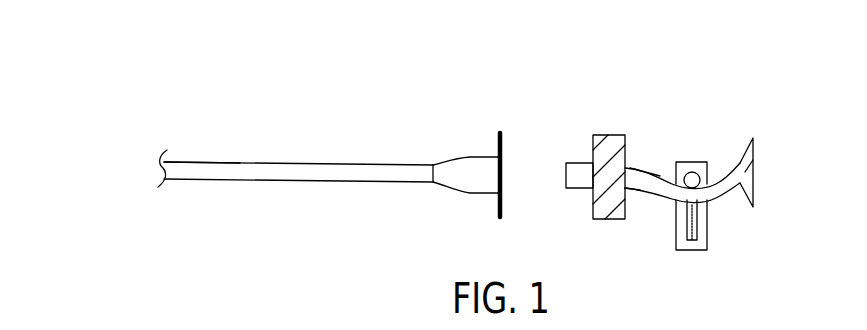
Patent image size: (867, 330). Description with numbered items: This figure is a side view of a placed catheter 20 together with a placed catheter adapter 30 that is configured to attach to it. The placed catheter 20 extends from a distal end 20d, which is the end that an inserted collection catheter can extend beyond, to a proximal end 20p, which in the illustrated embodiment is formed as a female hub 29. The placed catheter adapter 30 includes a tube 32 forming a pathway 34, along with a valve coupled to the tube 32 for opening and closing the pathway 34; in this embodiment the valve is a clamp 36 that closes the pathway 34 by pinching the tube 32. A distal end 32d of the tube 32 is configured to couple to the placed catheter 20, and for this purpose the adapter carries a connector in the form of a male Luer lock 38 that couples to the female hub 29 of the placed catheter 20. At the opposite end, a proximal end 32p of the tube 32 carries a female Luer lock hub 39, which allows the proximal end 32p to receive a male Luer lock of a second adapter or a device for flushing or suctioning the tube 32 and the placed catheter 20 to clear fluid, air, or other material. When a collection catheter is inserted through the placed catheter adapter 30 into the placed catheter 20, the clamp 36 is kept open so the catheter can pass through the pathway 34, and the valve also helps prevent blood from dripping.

The placed catheter 20 is at (288, 161).
The distal end of the placed catheter 20d is at (187, 194).
The proximal end of the placed catheter 20p is at (474, 199).
The female hub 29 is at (500, 132).
The placed catheter adapter 30 is at (725, 73).
The tube 32 is at (728, 196).
The distal end of the tube 32d is at (640, 205).
The proximal end of the tube 32p is at (752, 212).
The pathway 34 is at (655, 172).
The clamp 36 is at (690, 251).
The male Luer lock 38 is at (612, 134).
The female Luer lock hub 39 is at (755, 137).